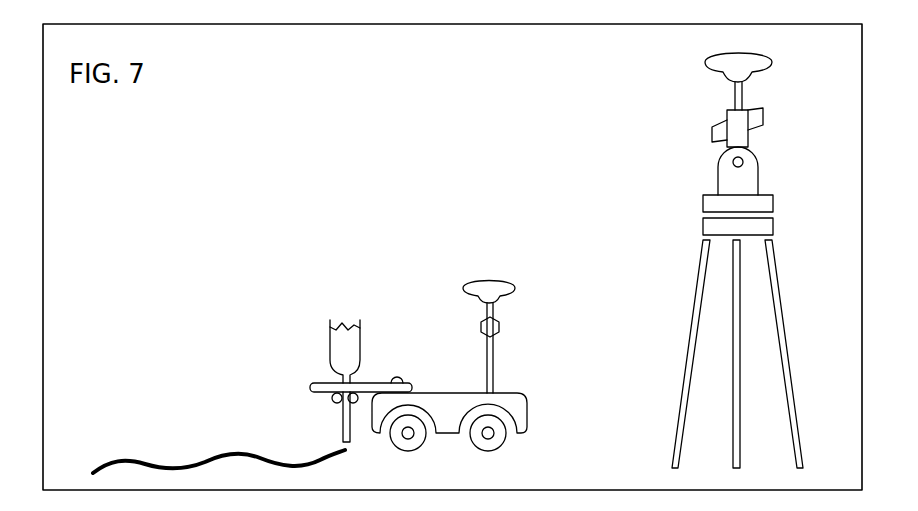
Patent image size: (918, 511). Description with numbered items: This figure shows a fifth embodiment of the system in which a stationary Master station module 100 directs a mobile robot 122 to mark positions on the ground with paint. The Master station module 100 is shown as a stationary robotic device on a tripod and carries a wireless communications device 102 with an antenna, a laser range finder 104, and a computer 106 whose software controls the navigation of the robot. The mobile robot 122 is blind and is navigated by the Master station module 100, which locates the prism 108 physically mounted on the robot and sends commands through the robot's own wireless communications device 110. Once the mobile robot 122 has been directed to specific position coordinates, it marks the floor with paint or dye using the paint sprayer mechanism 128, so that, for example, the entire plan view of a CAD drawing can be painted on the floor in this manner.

The Master station module 100 is at (667, 135).
The wireless communications device 102 is at (772, 63).
The laser range finder 104 is at (763, 118).
The computer 106 is at (758, 175).
The prism 108 is at (500, 327).
The wireless communications device 110 is at (515, 284).
The mobile robot 122 is at (527, 397).
The paint sprayer mechanism 128 is at (385, 360).